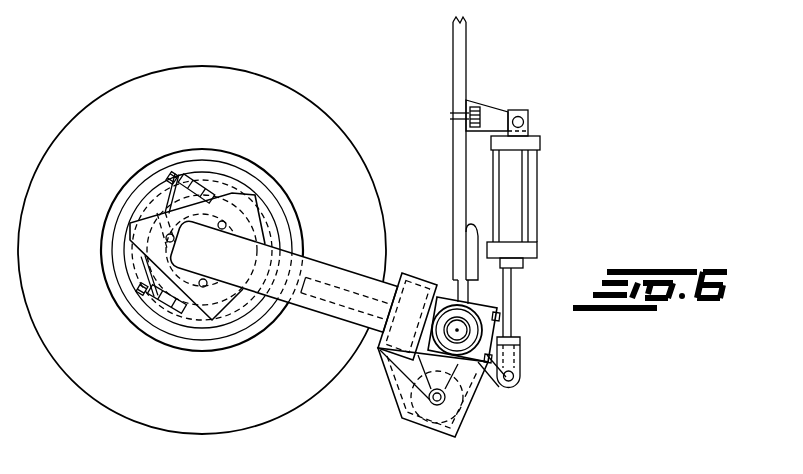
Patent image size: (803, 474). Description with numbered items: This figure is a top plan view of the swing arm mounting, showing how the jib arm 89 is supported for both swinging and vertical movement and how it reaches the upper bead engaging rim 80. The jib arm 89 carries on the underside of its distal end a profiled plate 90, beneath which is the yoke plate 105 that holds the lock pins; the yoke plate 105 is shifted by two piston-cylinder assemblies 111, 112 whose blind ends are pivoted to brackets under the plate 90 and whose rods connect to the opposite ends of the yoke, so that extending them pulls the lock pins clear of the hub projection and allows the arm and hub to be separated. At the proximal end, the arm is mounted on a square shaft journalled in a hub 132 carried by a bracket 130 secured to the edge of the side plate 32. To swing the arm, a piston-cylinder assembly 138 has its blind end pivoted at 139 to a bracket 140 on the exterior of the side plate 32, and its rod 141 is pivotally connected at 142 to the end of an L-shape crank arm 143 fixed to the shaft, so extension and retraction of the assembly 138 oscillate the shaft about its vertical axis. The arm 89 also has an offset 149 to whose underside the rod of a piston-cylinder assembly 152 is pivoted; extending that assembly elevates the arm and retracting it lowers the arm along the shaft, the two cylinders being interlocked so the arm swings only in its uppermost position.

The side plate 32 is at (467, 50).
The upper bead engaging rim 80 is at (254, 152).
The jib arm 89 is at (327, 255).
The plate 90 is at (128, 262).
The yoke plate 105 is at (168, 205).
The piston-cylinder assembly 111 is at (156, 306).
The piston-cylinder assembly 112 is at (203, 183).
The bracket 130 is at (477, 230).
The hub 132 is at (448, 303).
The piston-cylinder assembly 138 is at (538, 196).
The pivot 139 is at (529, 118).
The bracket 140 is at (498, 104).
The rod 141 is at (512, 294).
The pivot connection 142 is at (520, 381).
The L-shape crank arm 143 is at (488, 386).
The offset 149 is at (400, 370).
The piston-cylinder assembly 152 is at (402, 420).